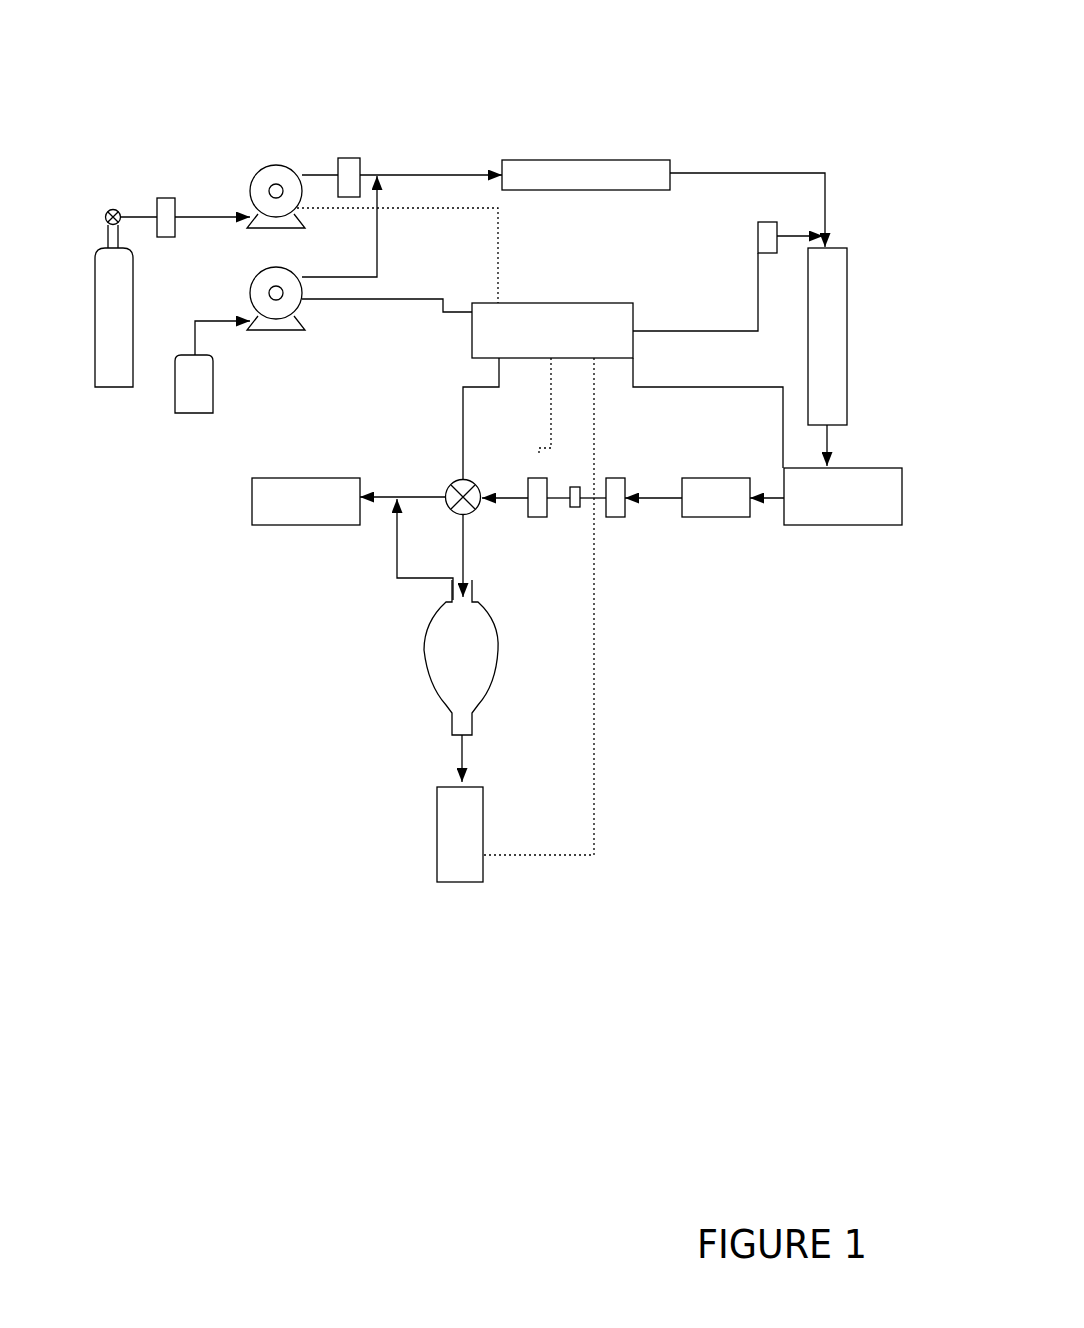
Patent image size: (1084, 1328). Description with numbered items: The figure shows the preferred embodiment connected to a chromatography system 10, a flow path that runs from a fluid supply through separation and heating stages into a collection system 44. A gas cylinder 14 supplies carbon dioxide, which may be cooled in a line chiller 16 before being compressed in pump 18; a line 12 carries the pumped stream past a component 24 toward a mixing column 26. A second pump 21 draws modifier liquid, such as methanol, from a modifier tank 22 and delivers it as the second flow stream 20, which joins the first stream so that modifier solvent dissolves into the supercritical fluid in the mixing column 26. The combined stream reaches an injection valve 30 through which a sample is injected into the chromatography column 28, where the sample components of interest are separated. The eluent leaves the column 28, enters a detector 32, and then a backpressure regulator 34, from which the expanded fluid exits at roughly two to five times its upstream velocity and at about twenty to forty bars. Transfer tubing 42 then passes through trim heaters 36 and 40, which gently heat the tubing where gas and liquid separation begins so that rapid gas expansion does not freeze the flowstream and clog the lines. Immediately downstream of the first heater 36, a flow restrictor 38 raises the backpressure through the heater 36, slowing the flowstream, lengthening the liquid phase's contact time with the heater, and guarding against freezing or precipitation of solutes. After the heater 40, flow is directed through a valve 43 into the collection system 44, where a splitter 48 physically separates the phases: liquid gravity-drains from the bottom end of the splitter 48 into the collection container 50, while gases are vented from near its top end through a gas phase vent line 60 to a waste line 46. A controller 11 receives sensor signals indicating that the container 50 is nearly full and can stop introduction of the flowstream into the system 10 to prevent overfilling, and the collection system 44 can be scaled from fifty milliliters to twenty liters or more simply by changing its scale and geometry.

The system 10 is at (298, 54).
The controller 11 is at (606, 303).
The supply line 12 is at (328, 173).
The carbon dioxide cylinder 14 is at (96, 253).
The line chiller 16 is at (166, 198).
The pump 18 is at (253, 173).
The second flow stream 20 is at (378, 243).
The modifier pump 21 is at (253, 276).
The modifier reservoir 22 is at (214, 393).
The pressure sensor 24 is at (349, 157).
The mixing column 26 is at (553, 159).
The chromatography column 28 is at (847, 307).
The injection valve 30 is at (757, 238).
The detector 32 is at (903, 483).
The backpressure regulator 34 is at (730, 478).
The trim heater 36 is at (620, 478).
The flow restrictor 38 is at (575, 487).
The trim heater 40 is at (538, 478).
The transfer tubing 42 is at (665, 501).
The valve 43 is at (455, 482).
The collection system 44 is at (343, 752).
The waste line 46 is at (303, 478).
The splitter 48 is at (498, 667).
The collection container 50 is at (437, 810).
The gas phase vent line 60 is at (395, 559).